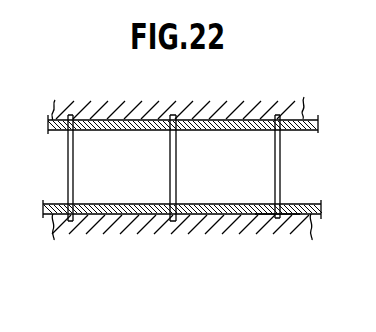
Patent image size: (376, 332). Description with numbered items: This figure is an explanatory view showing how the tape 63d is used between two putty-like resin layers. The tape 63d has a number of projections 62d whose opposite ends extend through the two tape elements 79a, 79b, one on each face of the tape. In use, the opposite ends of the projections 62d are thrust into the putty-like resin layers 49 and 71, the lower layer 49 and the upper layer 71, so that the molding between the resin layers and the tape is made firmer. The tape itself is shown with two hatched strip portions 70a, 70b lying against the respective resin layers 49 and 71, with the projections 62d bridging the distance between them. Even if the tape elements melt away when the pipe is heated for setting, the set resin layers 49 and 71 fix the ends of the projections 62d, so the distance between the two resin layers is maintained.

The putty-like resin layer 71 is at (125, 113).
The tape element 79b is at (175, 113).
The upper bar 70b is at (218, 131).
The projections 62d is at (170, 143).
The lower bar 70a is at (233, 216).
The tape element 79a is at (172, 223).
The putty-like resin layer 49 is at (202, 223).
The tape 63d is at (265, 215).